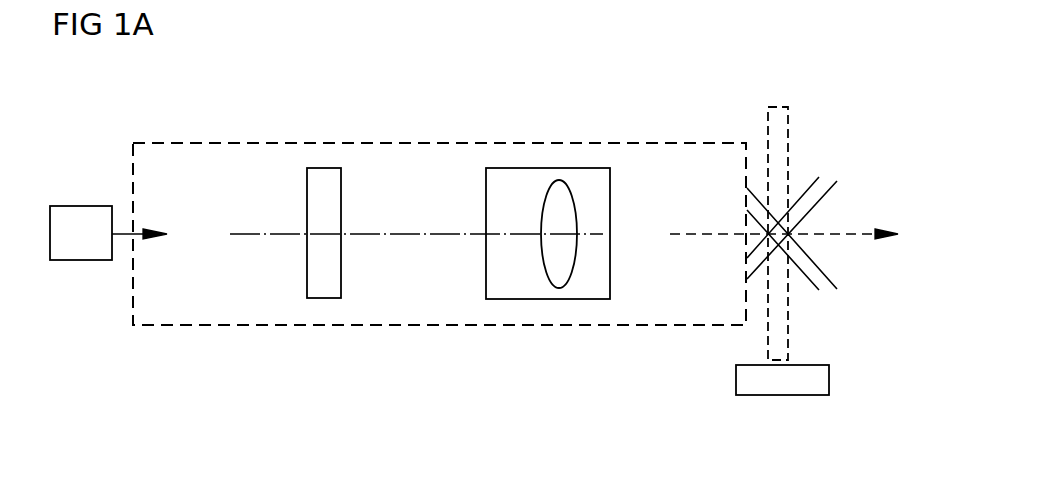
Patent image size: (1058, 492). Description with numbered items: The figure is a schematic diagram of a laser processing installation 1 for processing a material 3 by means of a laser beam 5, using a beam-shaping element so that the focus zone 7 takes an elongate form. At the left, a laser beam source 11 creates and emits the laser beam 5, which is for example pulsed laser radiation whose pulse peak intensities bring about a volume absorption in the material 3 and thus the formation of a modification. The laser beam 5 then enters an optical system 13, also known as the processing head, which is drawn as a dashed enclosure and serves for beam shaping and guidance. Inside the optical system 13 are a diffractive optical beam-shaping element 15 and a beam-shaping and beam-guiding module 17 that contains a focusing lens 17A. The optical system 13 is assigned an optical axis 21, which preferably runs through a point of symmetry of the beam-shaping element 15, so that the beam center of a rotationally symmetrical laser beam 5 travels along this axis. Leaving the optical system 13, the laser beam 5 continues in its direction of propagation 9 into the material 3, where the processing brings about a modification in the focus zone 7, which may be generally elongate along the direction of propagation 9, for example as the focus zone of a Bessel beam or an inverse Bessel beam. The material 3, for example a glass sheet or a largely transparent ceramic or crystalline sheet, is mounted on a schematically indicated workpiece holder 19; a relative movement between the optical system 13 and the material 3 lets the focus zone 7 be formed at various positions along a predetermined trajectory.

The laser processing installation 1 is at (248, 105).
The material 3 is at (774, 106).
The laser beam 5 is at (152, 229).
The focus zone 7 is at (807, 173).
The direction of propagation 9 is at (860, 233).
The laser beam source 11 is at (80, 205).
The optical system 13 is at (429, 142).
The diffractive optical beam-shaping element 15 is at (322, 167).
The beam-shaping and beam-guiding module 17 is at (508, 167).
The focusing lens 17A is at (560, 180).
The workpiece holder 19 is at (829, 377).
The optical axis 21 is at (247, 231).